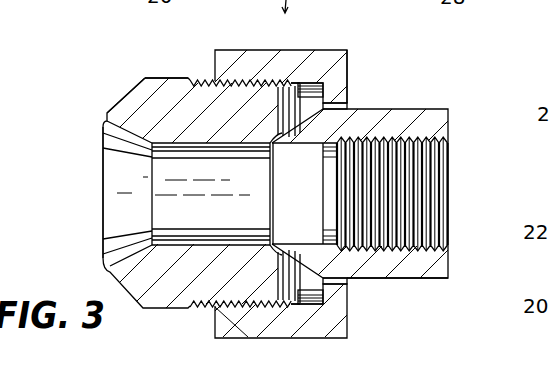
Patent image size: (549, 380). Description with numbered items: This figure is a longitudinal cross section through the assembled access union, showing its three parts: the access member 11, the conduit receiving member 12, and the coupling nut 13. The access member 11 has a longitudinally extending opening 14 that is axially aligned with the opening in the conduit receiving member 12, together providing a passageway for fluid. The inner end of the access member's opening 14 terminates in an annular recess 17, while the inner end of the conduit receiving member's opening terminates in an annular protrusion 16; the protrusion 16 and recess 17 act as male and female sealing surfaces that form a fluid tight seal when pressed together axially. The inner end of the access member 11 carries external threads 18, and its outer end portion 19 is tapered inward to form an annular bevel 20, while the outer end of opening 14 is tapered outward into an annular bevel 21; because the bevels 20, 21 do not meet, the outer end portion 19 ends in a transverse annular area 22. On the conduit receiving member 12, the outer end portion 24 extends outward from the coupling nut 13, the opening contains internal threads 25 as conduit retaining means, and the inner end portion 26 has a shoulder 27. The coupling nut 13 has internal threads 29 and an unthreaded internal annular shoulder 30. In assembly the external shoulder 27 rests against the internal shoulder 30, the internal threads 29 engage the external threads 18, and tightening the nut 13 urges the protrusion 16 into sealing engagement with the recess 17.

The access member 11 is at (131, 302).
The conduit receiving member 12 is at (397, 110).
The coupling nut 13 is at (231, 62).
The opening 14 is at (257, 183).
The annular protrusion 16 is at (333, 104).
The annular recess 17 is at (270, 222).
The external threads 18 is at (203, 80).
The outer end portion 19 is at (165, 77).
The annular bevel 20 is at (126, 100).
The annular bevel 21 is at (132, 220).
The annular area 22 is at (101, 214).
The outer end portion 24 is at (418, 280).
The internal threads 25 is at (438, 197).
The inner end portion 26 is at (348, 282).
The shoulder 27 is at (314, 90).
The internal threads 29 is at (245, 307).
The internal annular shoulder 30 is at (343, 63).